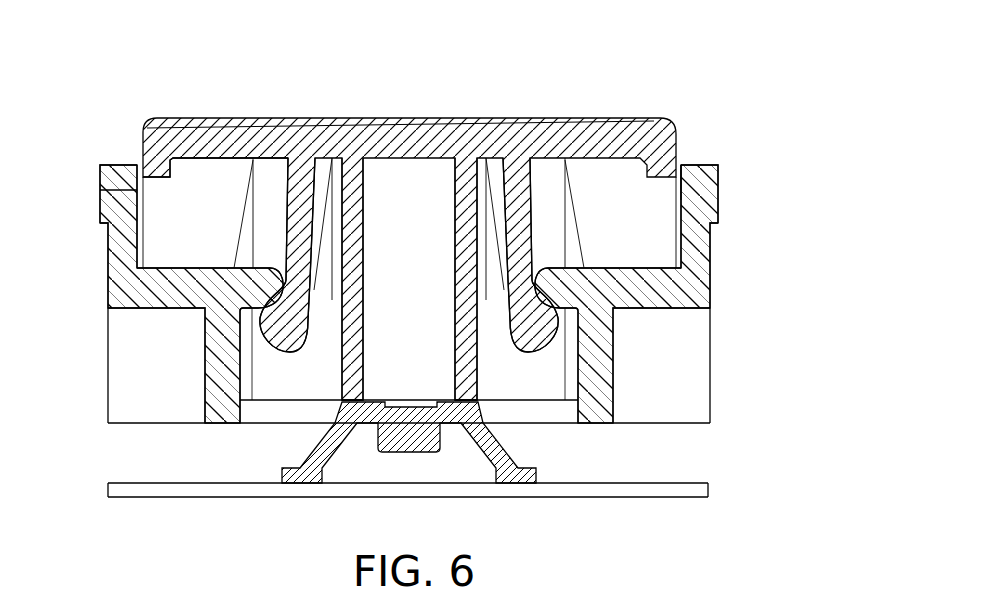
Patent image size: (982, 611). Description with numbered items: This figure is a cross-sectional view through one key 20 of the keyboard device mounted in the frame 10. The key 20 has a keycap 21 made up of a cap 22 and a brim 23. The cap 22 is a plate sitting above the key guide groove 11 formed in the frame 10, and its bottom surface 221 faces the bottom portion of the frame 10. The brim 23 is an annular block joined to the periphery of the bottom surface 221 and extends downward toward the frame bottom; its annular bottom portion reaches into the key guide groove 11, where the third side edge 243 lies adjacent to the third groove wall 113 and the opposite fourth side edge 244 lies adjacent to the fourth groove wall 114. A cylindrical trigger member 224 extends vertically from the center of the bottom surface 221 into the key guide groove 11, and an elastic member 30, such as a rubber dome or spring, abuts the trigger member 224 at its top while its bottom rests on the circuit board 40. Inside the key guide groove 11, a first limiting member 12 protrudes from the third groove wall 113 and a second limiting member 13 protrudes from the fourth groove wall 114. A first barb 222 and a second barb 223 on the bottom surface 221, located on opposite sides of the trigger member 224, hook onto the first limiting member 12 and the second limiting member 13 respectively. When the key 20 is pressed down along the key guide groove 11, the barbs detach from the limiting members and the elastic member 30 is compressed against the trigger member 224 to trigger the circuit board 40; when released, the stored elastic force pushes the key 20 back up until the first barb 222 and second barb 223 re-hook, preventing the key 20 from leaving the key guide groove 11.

The frame 10 is at (419, 275).
The key guide groove 11 is at (684, 161).
The first limiting member 12 is at (550, 292).
The second limiting member 13 is at (270, 288).
The key 20 is at (409, 245).
The keycap 21 is at (283, 62).
The cap 22 is at (263, 132).
The brim 23 is at (205, 132).
The elastic member 30 is at (516, 480).
The circuit board 40 is at (657, 490).
The third groove wall 113 is at (703, 243).
The fourth groove wall 114 is at (122, 247).
The bottom surface 221 is at (212, 158).
The first barb 222 is at (543, 318).
The second barb 223 is at (273, 312).
The trigger member 224 is at (363, 196).
The third side edge 243 is at (688, 210).
The fourth side edge 244 is at (133, 185).